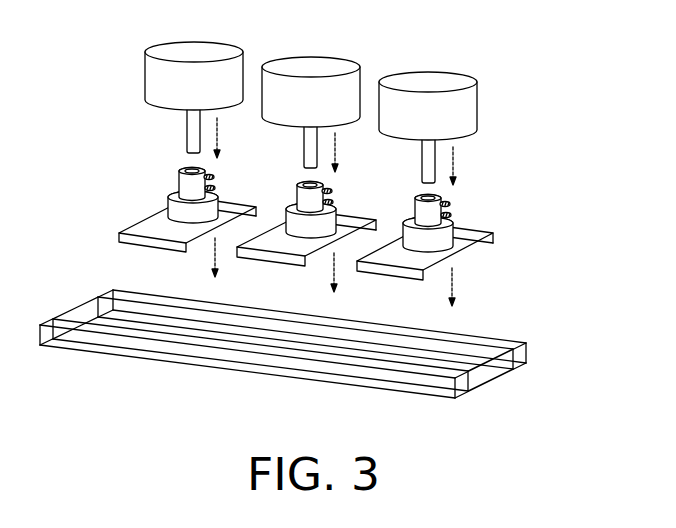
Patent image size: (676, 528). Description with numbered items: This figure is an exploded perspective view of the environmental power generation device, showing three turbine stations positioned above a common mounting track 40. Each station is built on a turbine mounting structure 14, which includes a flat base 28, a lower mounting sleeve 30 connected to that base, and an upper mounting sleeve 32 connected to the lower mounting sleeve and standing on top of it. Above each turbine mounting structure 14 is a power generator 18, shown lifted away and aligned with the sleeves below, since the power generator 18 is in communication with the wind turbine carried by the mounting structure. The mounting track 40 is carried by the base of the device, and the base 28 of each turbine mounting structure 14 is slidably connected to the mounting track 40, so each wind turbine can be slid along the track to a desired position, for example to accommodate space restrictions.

The turbine mounting structure 14 is at (492, 203).
The power generator 18 is at (507, 97).
The base 28 is at (118, 239).
The lower mounting sleeve 30 is at (168, 203).
The upper mounting sleeve 32 is at (178, 173).
The mounting track 40 is at (527, 344).